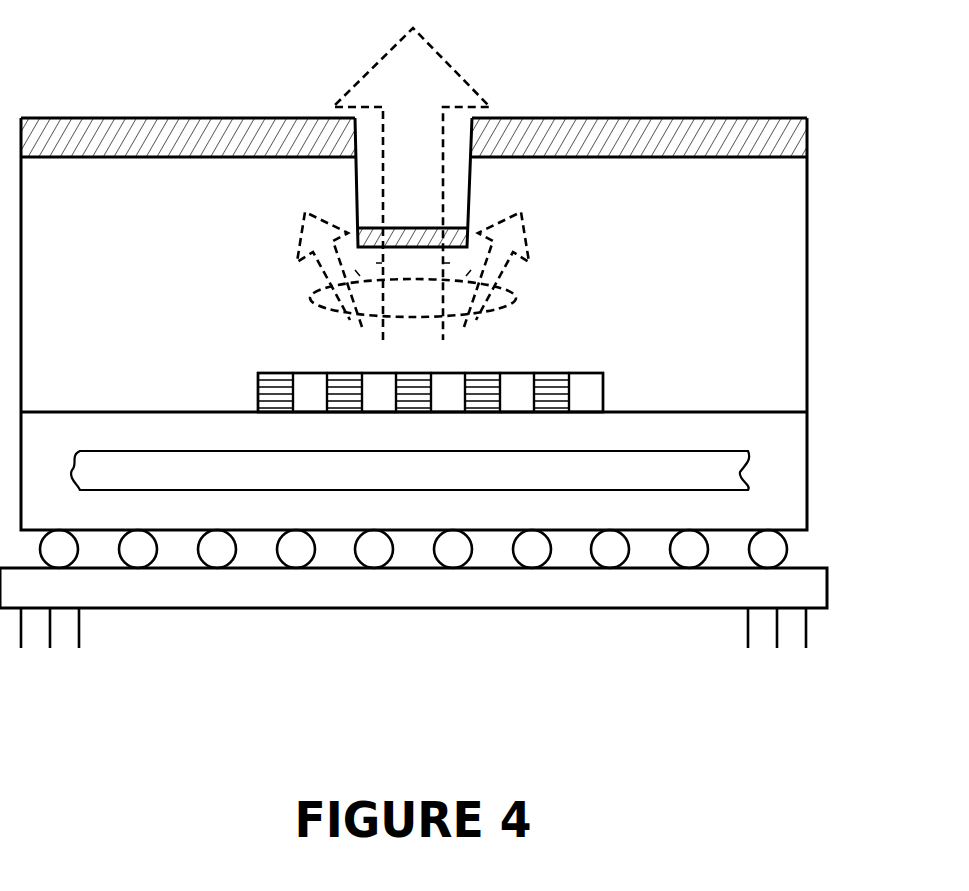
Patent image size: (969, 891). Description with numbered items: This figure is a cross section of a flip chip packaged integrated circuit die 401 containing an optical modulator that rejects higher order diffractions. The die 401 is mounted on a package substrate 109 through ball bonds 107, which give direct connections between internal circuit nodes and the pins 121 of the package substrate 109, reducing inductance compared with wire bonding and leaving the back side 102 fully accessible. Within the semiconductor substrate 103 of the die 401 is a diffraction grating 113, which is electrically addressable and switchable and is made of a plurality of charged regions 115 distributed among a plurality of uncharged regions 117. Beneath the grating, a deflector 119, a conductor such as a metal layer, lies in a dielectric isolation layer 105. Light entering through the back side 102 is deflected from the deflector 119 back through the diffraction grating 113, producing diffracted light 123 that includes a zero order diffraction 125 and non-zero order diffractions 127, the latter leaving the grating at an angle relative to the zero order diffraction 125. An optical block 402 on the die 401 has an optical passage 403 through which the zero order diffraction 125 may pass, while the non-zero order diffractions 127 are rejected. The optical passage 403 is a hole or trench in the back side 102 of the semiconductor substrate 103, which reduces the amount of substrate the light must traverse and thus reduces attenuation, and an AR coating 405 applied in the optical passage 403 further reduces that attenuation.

The flip chip packaged integrated circuit die 401 is at (846, 90).
The optical block 402 is at (108, 103).
The back side 102 is at (148, 160).
The optical passage 403 is at (458, 212).
The AR coating 405 is at (368, 228).
The zero order diffraction 125 is at (448, 48).
The non-zero order diffractions 127 is at (300, 240).
The diffracted light 123 is at (517, 298).
The semiconductor substrate 103 is at (795, 235).
The dielectric isolation layer 105 is at (795, 432).
The deflector 119 is at (670, 460).
The diffraction grating 113 is at (573, 362).
The charged regions 115 is at (550, 373).
The uncharged regions 117 is at (317, 397).
The ball bonds 107 is at (457, 560).
The package substrate 109 is at (818, 590).
The pins 121 is at (80, 655).